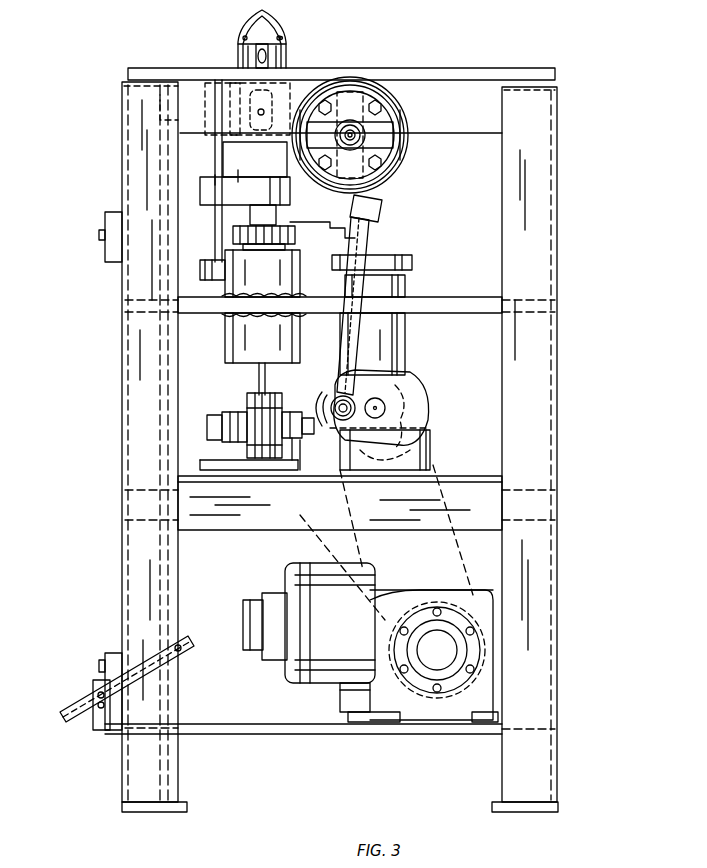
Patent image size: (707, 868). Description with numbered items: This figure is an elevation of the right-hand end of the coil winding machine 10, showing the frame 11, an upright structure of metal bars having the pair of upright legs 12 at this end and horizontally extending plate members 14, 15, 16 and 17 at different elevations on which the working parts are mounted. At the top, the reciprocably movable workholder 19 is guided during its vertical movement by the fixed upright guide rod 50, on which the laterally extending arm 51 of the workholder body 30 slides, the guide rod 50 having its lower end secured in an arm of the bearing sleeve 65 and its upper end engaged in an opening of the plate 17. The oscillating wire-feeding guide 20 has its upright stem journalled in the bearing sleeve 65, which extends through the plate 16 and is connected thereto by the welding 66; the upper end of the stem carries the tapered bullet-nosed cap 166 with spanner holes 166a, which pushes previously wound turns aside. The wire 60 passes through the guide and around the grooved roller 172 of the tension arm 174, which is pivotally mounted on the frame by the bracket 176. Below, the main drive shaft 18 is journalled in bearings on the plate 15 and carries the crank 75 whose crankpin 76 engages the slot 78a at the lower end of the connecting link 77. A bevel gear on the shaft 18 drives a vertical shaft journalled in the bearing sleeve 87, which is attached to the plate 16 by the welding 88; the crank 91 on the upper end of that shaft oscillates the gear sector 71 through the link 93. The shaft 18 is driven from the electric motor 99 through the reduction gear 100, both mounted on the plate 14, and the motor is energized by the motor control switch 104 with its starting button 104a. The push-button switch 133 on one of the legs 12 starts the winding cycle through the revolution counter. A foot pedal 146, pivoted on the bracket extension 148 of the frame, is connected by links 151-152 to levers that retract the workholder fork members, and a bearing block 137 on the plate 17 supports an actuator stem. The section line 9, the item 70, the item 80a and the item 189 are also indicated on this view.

The section line 9 is at (222, 222).
The coil winding machine 10 is at (472, 180).
The frame 11 is at (560, 258).
The upright legs 12 is at (175, 758).
The plate member 14 is at (305, 733).
The plate member 15 is at (455, 480).
The plate member 16 is at (438, 312).
The plate member 17 is at (430, 84).
The main drive shaft 18 is at (385, 408).
The workholder 19 is at (240, 165).
The wire-feeding guide 20 is at (262, 38).
The body 30 is at (283, 178).
The guide rod 50 is at (214, 142).
The arm 51 is at (200, 192).
The wire 60 is at (258, 375).
The bearing sleeve 65 is at (228, 336).
The welding 66 is at (302, 292).
The gear 70 is at (289, 226).
The gear sector 71 is at (200, 248).
The crank 75 is at (385, 426).
The crankpin 76 is at (328, 452).
The connecting link 77 is at (368, 226).
The slot 78a is at (334, 390).
The drive pulley 80a is at (402, 150).
The bearing sleeve 87 is at (404, 290).
The welding 88 is at (405, 317).
The crank 91 is at (412, 260).
The link 93 is at (338, 243).
The electric motor 99 is at (328, 686).
The reduction gear 100 is at (416, 586).
The motor control switch 104 is at (110, 648).
The starting button 104a is at (96, 666).
The push-button switch 133 is at (102, 260).
The bearing block 137 is at (283, 56).
The pedal 146 is at (191, 656).
The bracket extension 148 is at (87, 694).
The links 151-152 is at (170, 402).
The cap 166 is at (283, 38).
The holes 166a is at (284, 39).
The grooved roller 172 is at (243, 404).
The tension arm 174 is at (290, 412).
The bracket 176 is at (292, 467).
The adjustment member 189 is at (164, 861).